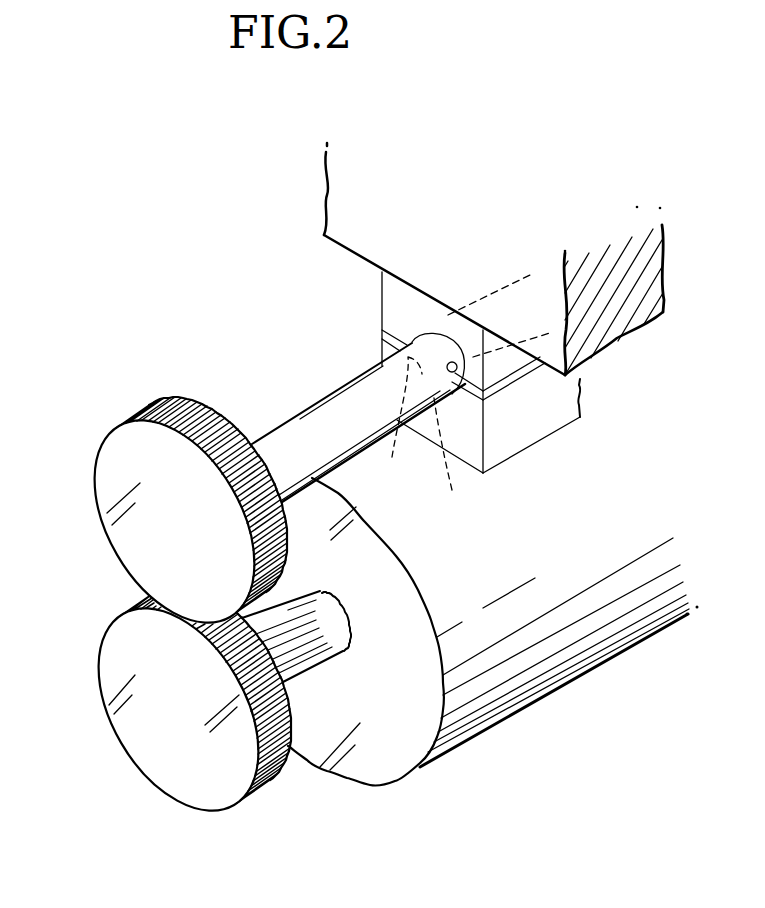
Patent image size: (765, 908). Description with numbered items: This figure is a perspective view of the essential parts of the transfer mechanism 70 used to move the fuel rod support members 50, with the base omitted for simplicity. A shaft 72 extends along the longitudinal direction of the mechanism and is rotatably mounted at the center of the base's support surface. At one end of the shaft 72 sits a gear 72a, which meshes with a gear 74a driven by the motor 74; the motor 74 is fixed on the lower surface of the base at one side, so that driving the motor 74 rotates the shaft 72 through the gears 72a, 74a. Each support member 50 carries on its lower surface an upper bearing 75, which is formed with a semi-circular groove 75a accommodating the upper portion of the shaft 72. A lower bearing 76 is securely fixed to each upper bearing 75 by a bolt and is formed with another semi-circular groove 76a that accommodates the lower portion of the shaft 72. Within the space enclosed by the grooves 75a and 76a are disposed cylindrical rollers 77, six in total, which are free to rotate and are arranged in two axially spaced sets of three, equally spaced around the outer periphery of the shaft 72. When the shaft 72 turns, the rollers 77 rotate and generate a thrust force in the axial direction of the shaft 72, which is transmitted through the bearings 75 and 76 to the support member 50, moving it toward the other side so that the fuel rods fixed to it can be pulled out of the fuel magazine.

The support member 50 is at (337, 187).
The transfer mechanism 70 is at (593, 399).
The shaft 72 is at (293, 437).
The gear 72a is at (115, 425).
The motor 74 is at (515, 675).
The gear 74a is at (243, 799).
The upper bearing 75 is at (393, 297).
The semi-circular groove 75a is at (447, 325).
The lower bearing 76 is at (382, 363).
The semi-circular groove 76a is at (392, 457).
The cylindrical roller 77 is at (382, 322).